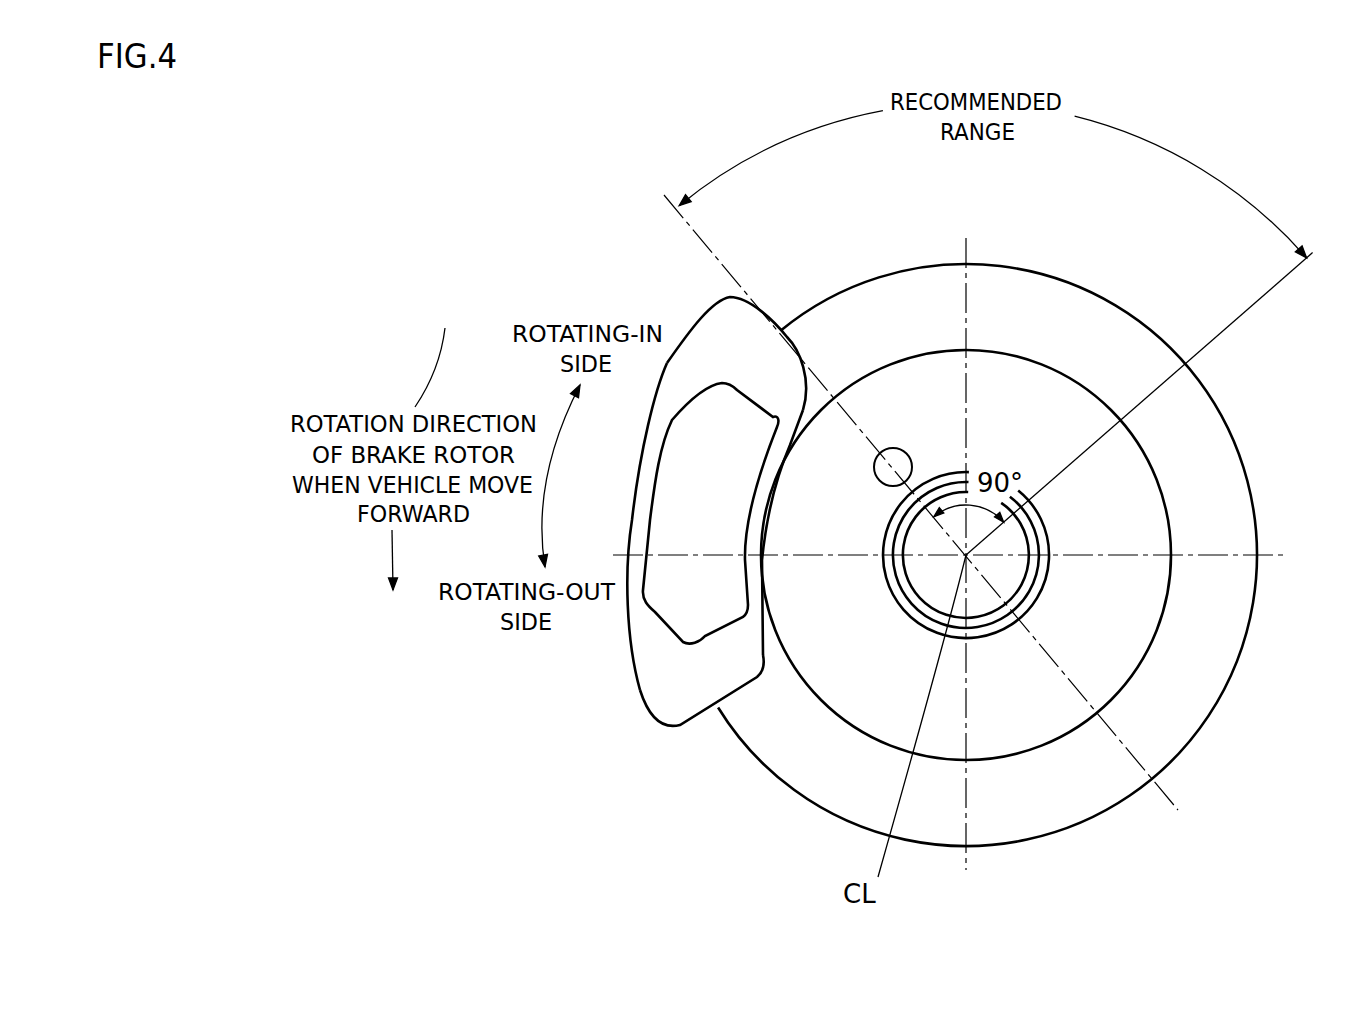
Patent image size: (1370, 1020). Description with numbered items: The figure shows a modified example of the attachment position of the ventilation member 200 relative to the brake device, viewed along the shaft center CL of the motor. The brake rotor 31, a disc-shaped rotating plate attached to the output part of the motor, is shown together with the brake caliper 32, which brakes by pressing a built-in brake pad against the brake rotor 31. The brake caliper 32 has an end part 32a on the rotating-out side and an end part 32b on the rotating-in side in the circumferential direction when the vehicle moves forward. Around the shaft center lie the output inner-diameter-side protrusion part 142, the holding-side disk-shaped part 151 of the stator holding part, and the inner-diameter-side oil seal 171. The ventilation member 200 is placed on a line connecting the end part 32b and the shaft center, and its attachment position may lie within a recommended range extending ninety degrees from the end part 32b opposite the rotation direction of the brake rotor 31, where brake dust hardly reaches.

The brake rotor 31 is at (1227, 637).
The brake caliper 32 is at (628, 673).
The end part on the rotating-out side 32a is at (695, 720).
The end part on the rotating-in side 32b is at (775, 313).
The output inner-diameter-side protrusion part 142 is at (1033, 580).
The holding-side disk-shaped part 151 is at (1110, 493).
The inner-diameter-side oil seal 171 is at (990, 632).
The ventilation member 200 is at (893, 448).